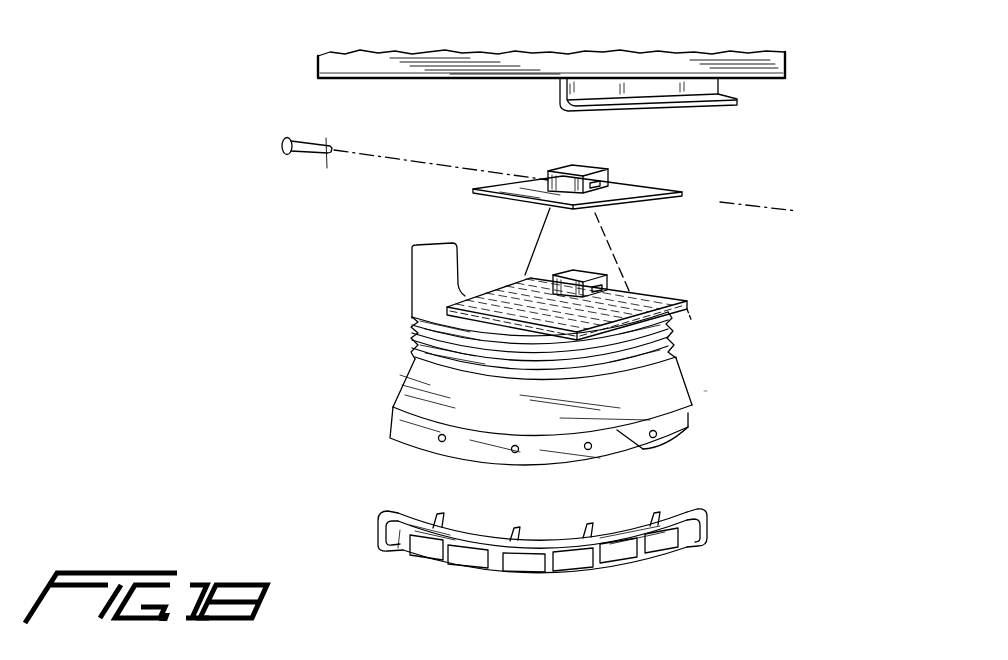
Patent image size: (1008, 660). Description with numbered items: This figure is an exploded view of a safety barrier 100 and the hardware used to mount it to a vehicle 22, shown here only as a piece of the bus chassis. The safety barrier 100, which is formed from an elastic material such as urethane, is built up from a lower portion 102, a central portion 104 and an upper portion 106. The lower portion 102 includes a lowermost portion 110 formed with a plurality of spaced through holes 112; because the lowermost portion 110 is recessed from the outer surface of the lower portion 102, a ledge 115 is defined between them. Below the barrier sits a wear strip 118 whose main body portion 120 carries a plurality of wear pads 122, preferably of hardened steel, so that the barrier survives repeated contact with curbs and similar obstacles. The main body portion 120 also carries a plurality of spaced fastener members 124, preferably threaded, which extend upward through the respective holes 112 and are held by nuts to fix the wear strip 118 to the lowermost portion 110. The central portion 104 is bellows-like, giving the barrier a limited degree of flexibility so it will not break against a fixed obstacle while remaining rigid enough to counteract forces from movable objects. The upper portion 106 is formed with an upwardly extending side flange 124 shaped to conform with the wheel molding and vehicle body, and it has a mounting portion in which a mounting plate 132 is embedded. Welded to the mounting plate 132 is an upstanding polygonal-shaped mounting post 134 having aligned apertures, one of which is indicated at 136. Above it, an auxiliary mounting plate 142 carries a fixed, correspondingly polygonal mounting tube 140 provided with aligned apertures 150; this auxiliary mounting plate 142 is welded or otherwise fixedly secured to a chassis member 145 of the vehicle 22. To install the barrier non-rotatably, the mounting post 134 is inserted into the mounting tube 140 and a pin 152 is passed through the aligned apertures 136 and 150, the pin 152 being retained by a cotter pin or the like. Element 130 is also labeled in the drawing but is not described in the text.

The vehicle 22 is at (790, 60).
The chassis member 145 is at (738, 103).
The pin 152 is at (305, 157).
The auxiliary mounting plate 142 is at (684, 196).
The mounting tube 140 is at (606, 170).
The aligned apertures 150 is at (603, 184).
The aperture 136 is at (612, 288).
The mounting post 134 is at (565, 270).
The laminated plate 130 is at (690, 292).
The mounting plate 132 is at (690, 322).
The fastener member 124 is at (412, 262).
The upper portion 106 is at (412, 303).
The central portion 104 is at (408, 338).
The lower portion 102 is at (392, 395).
The safety barrier 100 is at (705, 392).
The lowermost portion 110 is at (688, 422).
The ledge 115 is at (656, 456).
The through holes 112 is at (440, 442).
The wear strip 118 is at (709, 527).
The wear pads 122 is at (382, 536).
The main body portion 120 is at (535, 543).